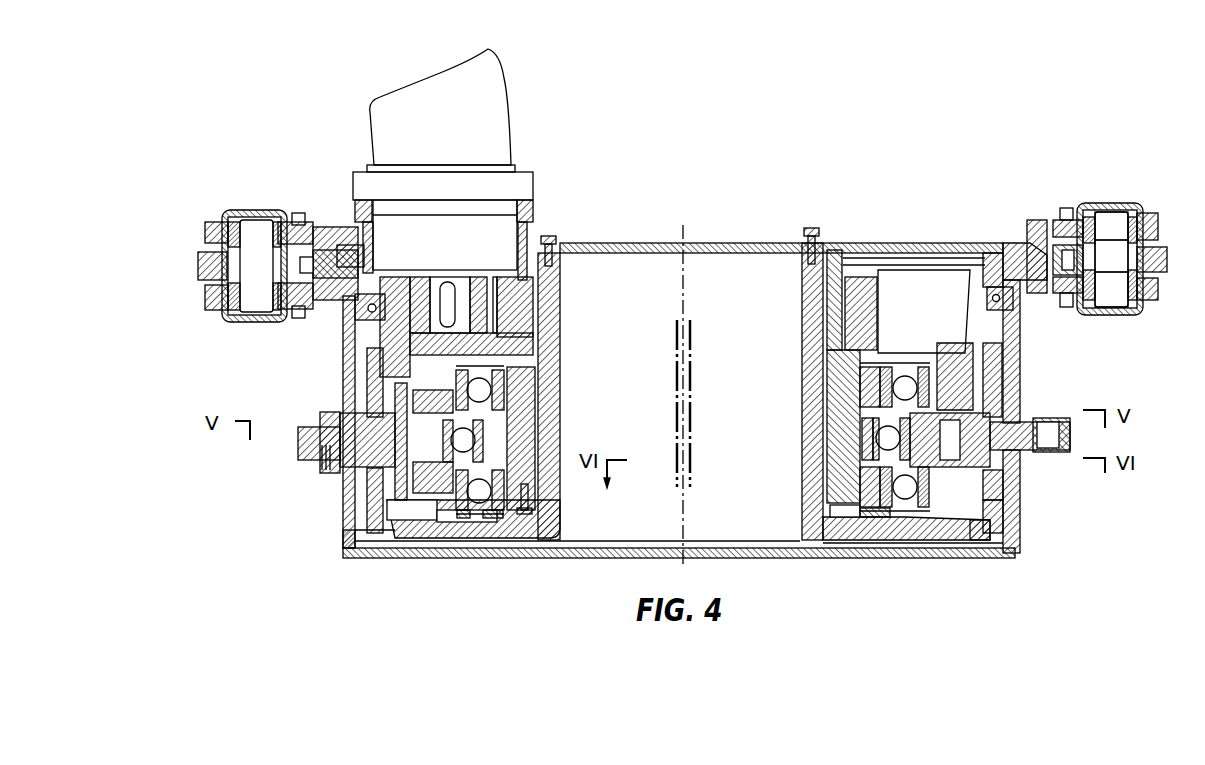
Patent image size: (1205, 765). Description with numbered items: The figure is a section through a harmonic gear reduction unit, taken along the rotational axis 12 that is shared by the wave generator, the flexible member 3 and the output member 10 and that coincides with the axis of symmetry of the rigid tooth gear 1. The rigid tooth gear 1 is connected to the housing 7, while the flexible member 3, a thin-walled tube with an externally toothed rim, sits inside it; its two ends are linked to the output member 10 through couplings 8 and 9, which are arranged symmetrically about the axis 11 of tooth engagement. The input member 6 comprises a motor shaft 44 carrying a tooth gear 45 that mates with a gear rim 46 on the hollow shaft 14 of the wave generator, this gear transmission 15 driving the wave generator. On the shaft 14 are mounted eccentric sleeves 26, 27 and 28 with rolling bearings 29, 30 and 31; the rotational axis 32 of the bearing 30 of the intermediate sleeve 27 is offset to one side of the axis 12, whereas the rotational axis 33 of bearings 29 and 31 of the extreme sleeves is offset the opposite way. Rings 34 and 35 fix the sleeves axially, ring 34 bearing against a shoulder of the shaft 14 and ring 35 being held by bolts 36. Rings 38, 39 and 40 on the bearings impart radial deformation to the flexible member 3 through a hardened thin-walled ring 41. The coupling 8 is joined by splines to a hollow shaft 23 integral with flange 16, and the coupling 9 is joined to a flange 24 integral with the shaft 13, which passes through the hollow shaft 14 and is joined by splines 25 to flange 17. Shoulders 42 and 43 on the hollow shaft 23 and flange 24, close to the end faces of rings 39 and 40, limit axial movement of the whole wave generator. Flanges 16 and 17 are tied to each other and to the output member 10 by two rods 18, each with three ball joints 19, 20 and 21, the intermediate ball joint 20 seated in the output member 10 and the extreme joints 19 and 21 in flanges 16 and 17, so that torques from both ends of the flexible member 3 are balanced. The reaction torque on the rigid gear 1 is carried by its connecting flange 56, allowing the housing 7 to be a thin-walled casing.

The rigid tooth gear 1 is at (352, 434).
The flexible member 3 is at (395, 400).
The input member 6 is at (437, 300).
The housing 7 is at (350, 330).
The coupling 8 is at (368, 360).
The coupling 9 is at (360, 513).
The output member 10 is at (205, 268).
The axis of engagement 11 is at (378, 460).
The rotational axis 12 is at (681, 304).
The shaft 13 is at (558, 395).
The shaft of the wave generator 14 is at (525, 430).
The gear transmission 15 is at (502, 316).
The flange 16 is at (998, 250).
The flange 17 is at (908, 250).
The rod 18 is at (1107, 215).
The ball joint 19 is at (1111, 234).
The ball joint 20 is at (1111, 259).
The ball joint 21 is at (1111, 289).
The hollow shaft 23 is at (970, 303).
The flange 24 is at (940, 545).
The splines 25 is at (546, 303).
The eccentric sleeve 26 is at (830, 390).
The eccentric sleeve 27 is at (862, 430).
The eccentric sleeve 28 is at (842, 478).
The rolling bearing 29 is at (905, 380).
The rolling bearing 30 is at (842, 455).
The rolling bearing 31 is at (905, 500).
The rod 32 is at (676, 430).
The rotational axis 33 is at (692, 420).
The ring 34 is at (488, 365).
The ring 35 is at (490, 514).
The bolts 36 is at (530, 510).
The ring 38 is at (1005, 382).
The ring 39 is at (1015, 405).
The ring 40 is at (1020, 506).
The thin-walled ring 41 is at (1020, 481).
The shoulder 42 is at (942, 358).
The shoulder 43 is at (977, 532).
The motor shaft 44 is at (503, 128).
The tooth gear 45 is at (466, 292).
The gear rim 46 is at (500, 300).
The connecting flange 56 is at (1066, 448).